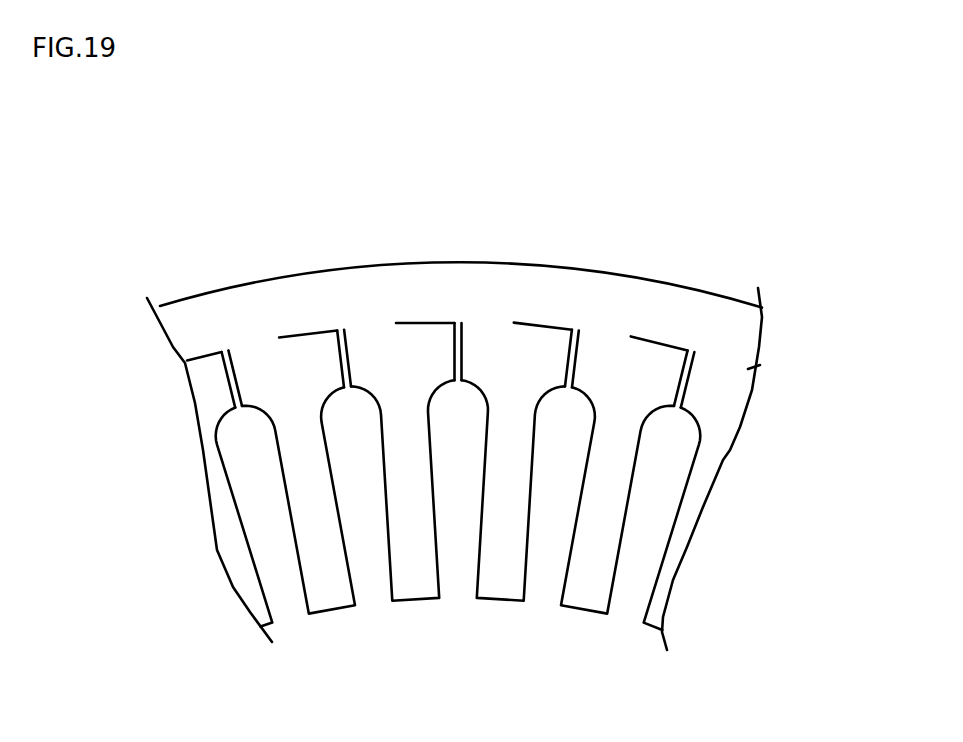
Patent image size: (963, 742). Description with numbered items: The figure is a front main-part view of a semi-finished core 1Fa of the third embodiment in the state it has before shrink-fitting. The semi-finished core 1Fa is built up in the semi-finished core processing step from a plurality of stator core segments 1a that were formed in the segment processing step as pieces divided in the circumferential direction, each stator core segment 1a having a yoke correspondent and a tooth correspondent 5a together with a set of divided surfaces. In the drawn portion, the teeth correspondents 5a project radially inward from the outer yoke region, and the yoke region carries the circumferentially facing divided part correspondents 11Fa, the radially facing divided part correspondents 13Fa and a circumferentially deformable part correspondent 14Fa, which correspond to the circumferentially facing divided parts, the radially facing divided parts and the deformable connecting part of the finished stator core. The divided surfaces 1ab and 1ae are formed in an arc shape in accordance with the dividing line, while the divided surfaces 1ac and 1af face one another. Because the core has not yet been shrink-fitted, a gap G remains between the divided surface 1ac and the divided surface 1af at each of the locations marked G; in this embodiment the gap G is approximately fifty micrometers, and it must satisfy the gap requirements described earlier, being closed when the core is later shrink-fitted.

The stator core segment 1a is at (300, 274).
The semi-finished core 1Fa is at (383, 262).
The divided surface 1ab is at (315, 333).
The divided surface 1ae is at (300, 343).
The divided surface 1af is at (338, 448).
The divided surface 1ac is at (346, 352).
The tooth correspondent 5a is at (498, 590).
The radially facing divided part correspondent 13Fa is at (432, 317).
The circumferentially facing divided part correspondent 11Fa is at (462, 339).
The circumferentially deformable part correspondent 14Fa is at (645, 300).
The gap G is at (240, 408).